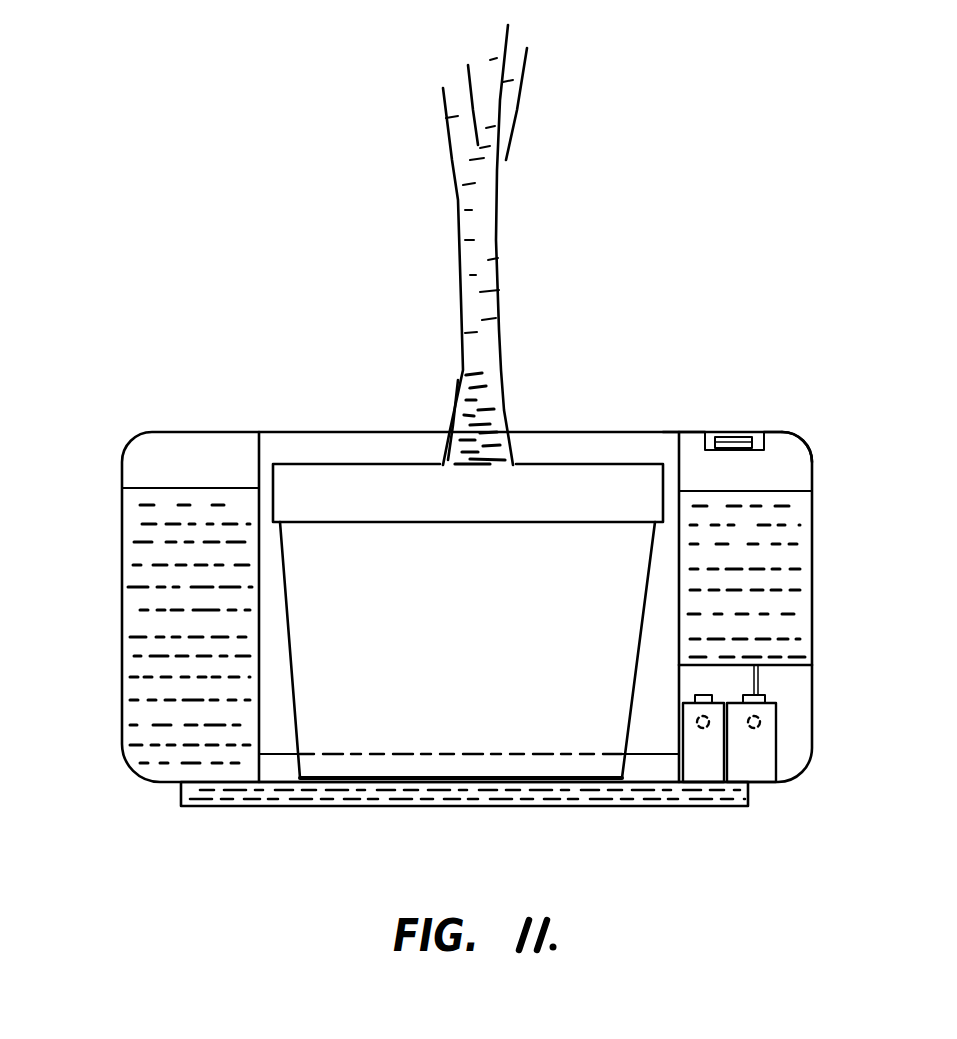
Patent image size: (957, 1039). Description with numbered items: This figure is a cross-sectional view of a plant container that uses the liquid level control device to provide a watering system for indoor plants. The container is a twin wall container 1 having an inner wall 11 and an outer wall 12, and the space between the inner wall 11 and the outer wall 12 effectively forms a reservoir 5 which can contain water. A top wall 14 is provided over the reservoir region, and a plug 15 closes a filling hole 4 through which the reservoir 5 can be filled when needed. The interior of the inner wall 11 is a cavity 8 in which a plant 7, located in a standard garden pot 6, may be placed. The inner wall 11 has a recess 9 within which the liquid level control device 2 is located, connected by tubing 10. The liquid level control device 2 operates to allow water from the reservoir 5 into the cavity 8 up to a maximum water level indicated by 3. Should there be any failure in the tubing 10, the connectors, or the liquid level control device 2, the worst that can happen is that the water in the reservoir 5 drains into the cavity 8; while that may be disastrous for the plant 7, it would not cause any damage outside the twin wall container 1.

The twin wall container 1 is at (812, 575).
The liquid level control device 2 is at (766, 738).
The maximum water level 3 is at (648, 762).
The filling hole 4 is at (748, 432).
The reservoir 5 is at (162, 664).
The standard garden pot 6 is at (323, 484).
The plant 7 is at (490, 318).
The cavity 8 is at (657, 440).
The recess 9 is at (795, 704).
The tubing 10 is at (762, 686).
The inner wall 11 is at (673, 583).
The outer wall 12 is at (802, 636).
The top wall 14 is at (780, 432).
The plug 15 is at (718, 432).